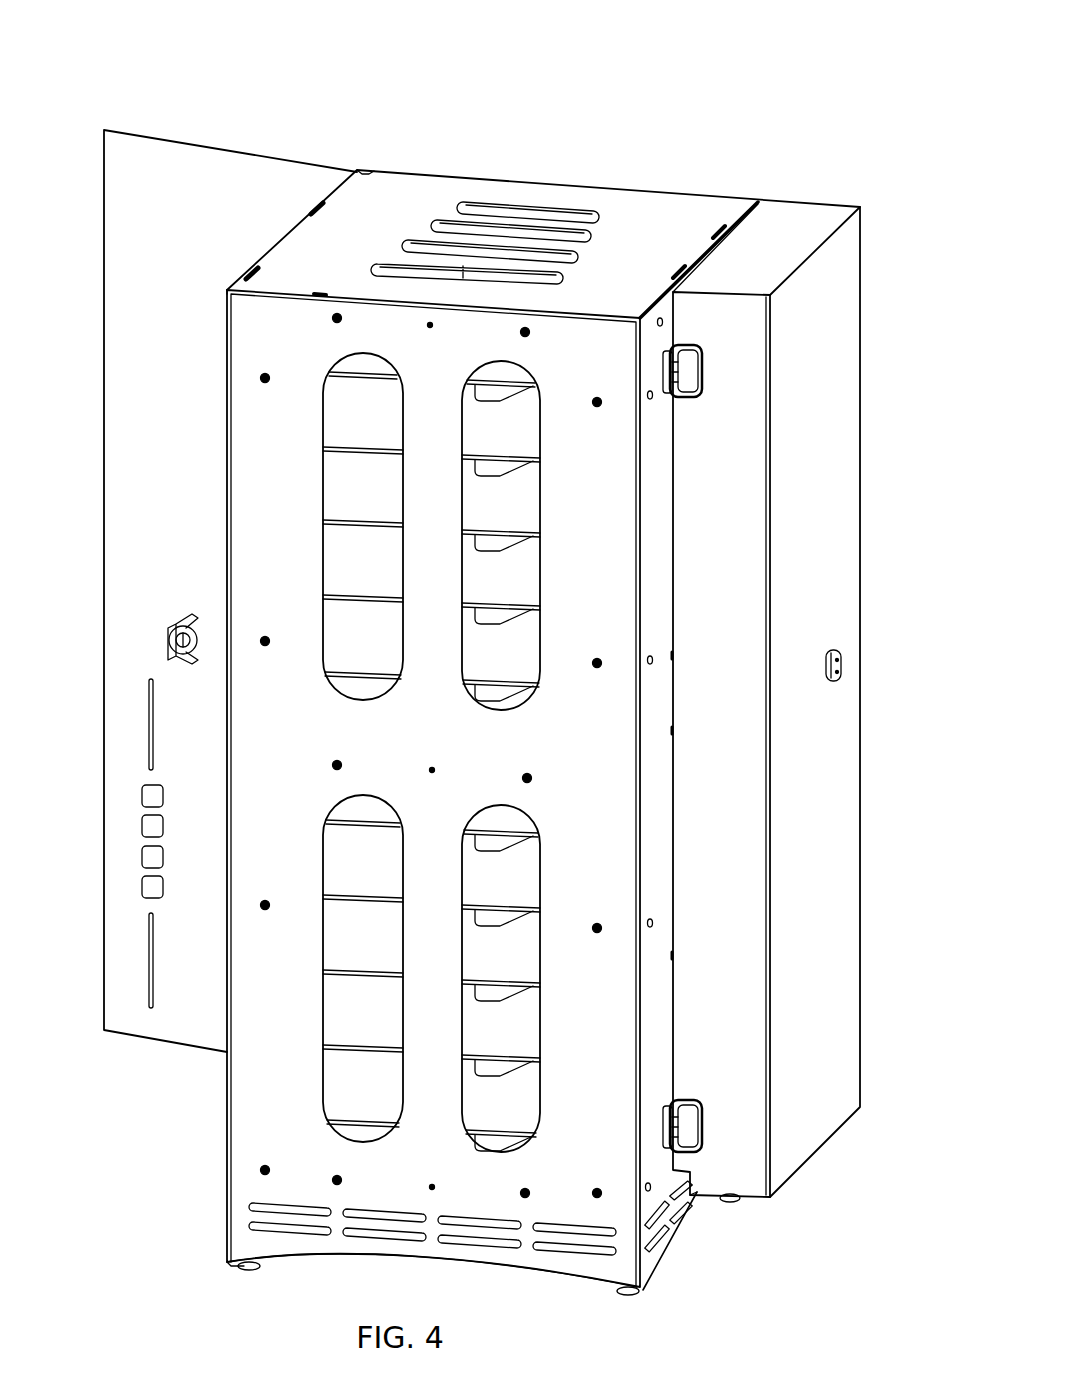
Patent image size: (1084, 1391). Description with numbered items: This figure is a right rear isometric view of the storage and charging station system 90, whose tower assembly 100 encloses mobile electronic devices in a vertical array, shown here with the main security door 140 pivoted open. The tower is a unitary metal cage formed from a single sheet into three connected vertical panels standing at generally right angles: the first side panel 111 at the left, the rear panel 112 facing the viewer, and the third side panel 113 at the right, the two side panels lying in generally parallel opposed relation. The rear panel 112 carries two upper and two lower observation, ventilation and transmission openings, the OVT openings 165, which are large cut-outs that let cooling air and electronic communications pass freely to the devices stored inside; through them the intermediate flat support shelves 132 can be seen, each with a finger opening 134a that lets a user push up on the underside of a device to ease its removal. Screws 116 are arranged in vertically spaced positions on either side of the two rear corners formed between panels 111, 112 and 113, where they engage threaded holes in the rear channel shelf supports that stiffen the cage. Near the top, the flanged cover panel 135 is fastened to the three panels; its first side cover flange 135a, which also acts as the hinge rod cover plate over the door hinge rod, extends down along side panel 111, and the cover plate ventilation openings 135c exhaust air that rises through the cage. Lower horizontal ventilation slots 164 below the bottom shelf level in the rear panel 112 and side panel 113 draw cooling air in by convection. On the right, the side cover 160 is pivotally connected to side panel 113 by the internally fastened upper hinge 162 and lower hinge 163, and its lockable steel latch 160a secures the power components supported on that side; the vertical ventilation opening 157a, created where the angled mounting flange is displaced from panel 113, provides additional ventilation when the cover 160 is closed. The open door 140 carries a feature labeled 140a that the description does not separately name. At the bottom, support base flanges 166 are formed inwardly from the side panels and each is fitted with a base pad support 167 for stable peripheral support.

The tower assembly 100 is at (622, 60).
The storage and charging station system 90 is at (227, 290).
The first vertically extending side panel 111 is at (225, 1127).
The second vertically extending rear panel 112 is at (373, 1262).
The third vertically extending side panel 113 is at (690, 1230).
The screw fasteners 116 is at (338, 316).
The intermediate flat support shelves 132 is at (357, 450).
The finger opening 134a is at (510, 548).
The flanged cover panel 135 is at (543, 210).
The first side cover flange 135a is at (359, 169).
The cover plate ventilation openings 135c is at (586, 235).
The main security door 140 is at (230, 559).
The control knob 140a is at (178, 624).
The vertical ventilation opening 157a is at (668, 706).
The side cover 160 is at (813, 703).
The lockable steel latch 160a is at (827, 683).
The upper hinge 162 is at (692, 400).
The lower hinge 163 is at (690, 1097).
The lower horizontal ventilation slots 164 is at (253, 1205).
The OVT openings 165 is at (490, 805).
The support base flanges 166 is at (233, 1267).
The base pad support 167 is at (254, 1273).